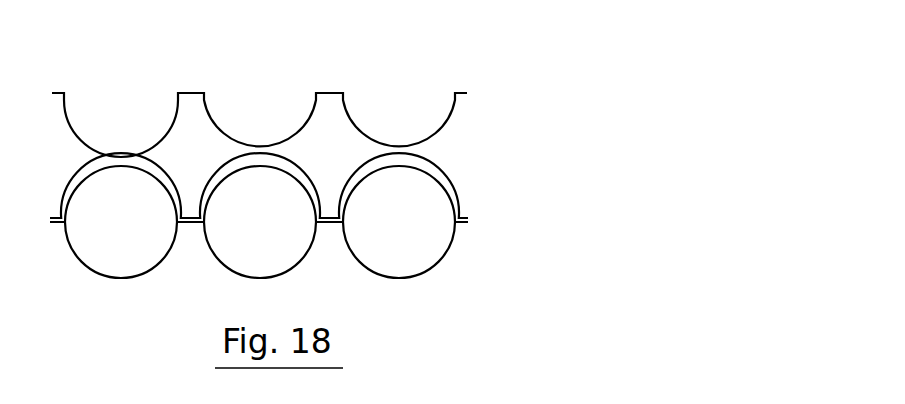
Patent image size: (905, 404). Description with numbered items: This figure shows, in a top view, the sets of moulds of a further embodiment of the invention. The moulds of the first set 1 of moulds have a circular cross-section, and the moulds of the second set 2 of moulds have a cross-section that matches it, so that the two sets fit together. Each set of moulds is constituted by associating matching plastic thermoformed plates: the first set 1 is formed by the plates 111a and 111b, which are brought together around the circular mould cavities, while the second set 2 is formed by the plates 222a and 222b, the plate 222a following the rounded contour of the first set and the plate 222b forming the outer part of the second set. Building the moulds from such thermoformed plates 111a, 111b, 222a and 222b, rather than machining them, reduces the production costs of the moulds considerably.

The first set of moulds 1 is at (134, 227).
The second set of moulds 2 is at (205, 162).
The plastic thermoformed plate 111a is at (447, 248).
The plastic thermoformed plate 111b is at (456, 199).
The plastic thermoformed plate 222a is at (442, 180).
The plastic thermoformed plate 222b is at (452, 114).